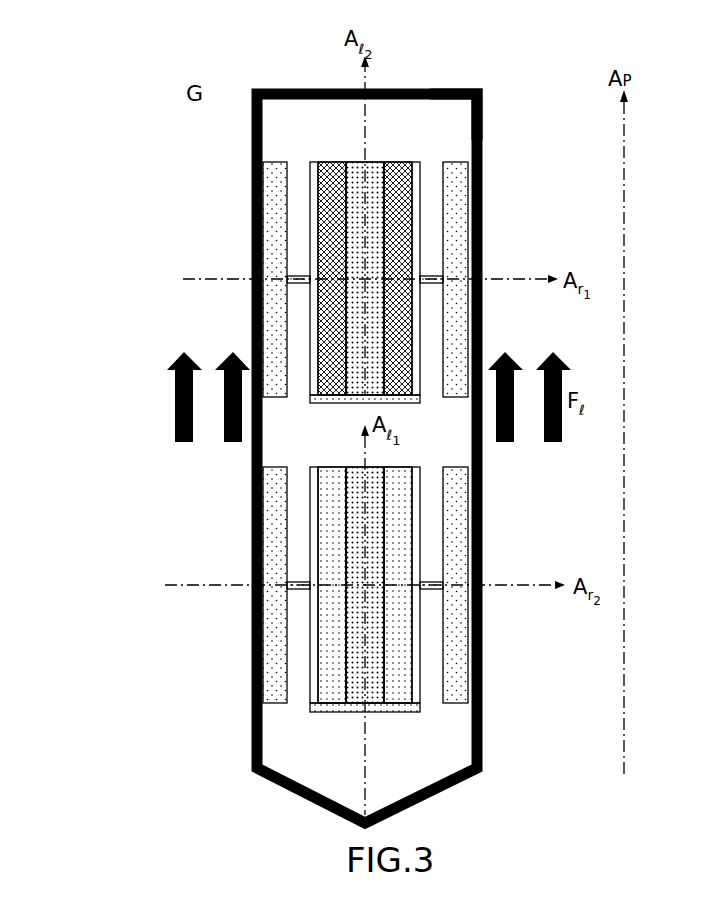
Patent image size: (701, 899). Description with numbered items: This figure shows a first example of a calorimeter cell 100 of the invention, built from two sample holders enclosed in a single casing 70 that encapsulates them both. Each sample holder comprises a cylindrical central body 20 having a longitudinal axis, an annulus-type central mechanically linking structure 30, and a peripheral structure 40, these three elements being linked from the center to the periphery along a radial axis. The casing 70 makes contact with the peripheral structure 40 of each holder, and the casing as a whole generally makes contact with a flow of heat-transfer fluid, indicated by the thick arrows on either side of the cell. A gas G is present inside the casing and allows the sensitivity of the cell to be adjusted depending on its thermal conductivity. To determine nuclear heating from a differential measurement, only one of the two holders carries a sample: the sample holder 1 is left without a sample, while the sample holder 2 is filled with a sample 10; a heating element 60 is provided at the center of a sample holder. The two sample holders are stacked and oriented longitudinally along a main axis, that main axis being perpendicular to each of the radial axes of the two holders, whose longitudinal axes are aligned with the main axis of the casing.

The calorimeter cell 100 is at (168, 338).
The sample holder 1 is at (285, 733).
The sample holder 2 is at (403, 122).
The sample 10 is at (328, 252).
The cylindrical central body 20 is at (328, 403).
The central mechanically linking structure 30 is at (432, 278).
The peripheral structure 40 is at (462, 220).
The heating element 60 is at (355, 671).
The casing 70 is at (482, 104).